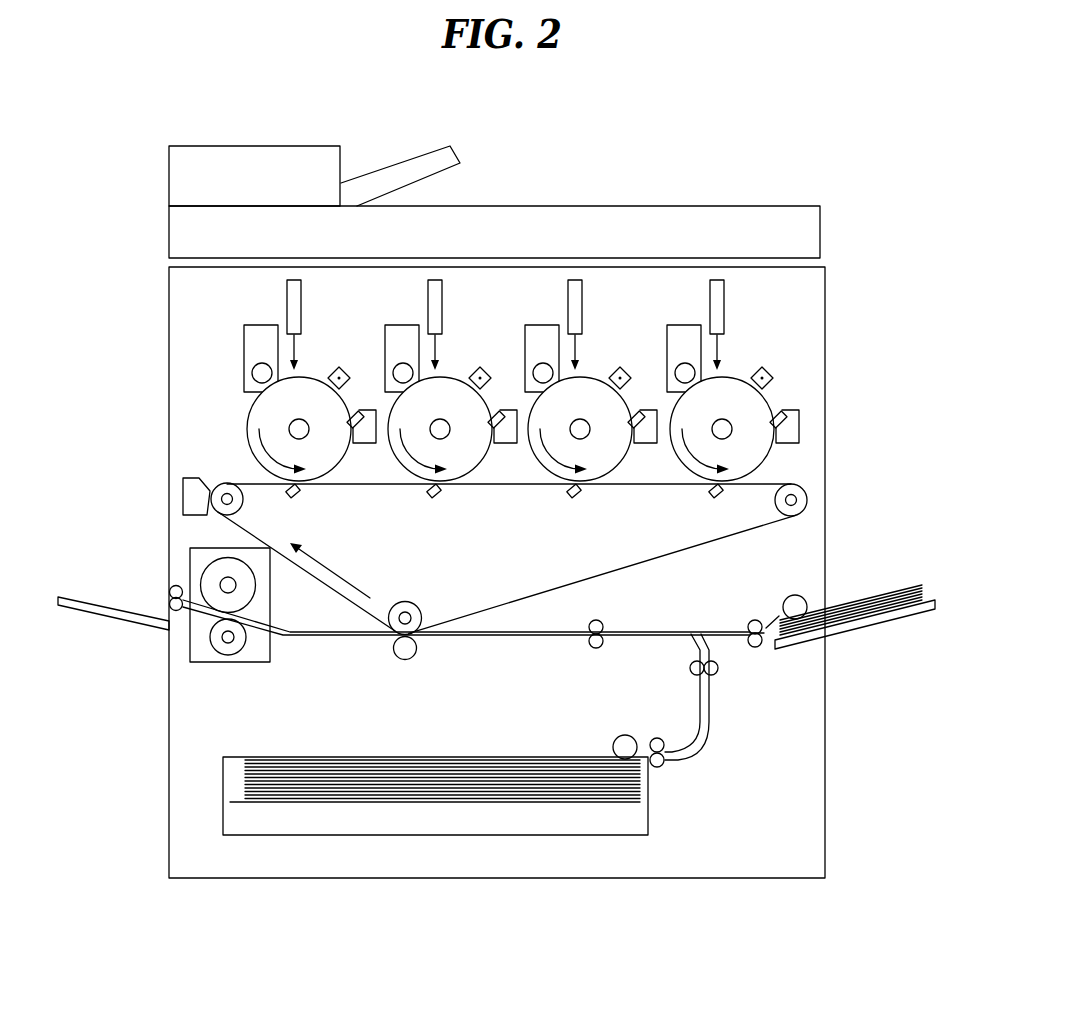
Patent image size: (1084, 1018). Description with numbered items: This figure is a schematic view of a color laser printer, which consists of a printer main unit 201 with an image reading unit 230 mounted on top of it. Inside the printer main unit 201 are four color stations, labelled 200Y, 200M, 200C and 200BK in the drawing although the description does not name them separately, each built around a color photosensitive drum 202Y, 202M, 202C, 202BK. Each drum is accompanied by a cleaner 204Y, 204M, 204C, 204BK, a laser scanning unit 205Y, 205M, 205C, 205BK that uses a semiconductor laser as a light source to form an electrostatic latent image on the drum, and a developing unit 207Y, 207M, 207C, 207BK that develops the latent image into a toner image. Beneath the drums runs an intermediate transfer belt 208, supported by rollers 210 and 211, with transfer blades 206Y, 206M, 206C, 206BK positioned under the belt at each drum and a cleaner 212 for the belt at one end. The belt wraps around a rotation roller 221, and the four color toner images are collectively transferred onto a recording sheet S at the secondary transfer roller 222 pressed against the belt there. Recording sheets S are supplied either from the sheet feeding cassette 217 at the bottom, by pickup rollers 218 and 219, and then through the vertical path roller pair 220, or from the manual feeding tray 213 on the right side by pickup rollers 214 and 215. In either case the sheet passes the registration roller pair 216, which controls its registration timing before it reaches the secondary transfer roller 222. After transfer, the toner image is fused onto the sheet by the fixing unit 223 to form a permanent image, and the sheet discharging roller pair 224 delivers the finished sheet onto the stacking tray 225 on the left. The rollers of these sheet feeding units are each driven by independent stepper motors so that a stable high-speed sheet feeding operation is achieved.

The printer main unit 201 is at (168, 308).
The image reading unit 230 is at (673, 206).
The image forming station (yellow) 200Y is at (291, 407).
The image forming station (magenta) 200M is at (431, 423).
The image forming station (cyan) 200C is at (570, 422).
The image forming station (black) 200BK is at (745, 408).
The color photosensitive drum 202Y is at (342, 467).
The color photosensitive drum 202M is at (482, 467).
The color photosensitive drum 202C is at (620, 467).
The color photosensitive drum 202BK is at (745, 462).
The cleaner 204Y is at (369, 444).
The cleaner 204M is at (510, 444).
The cleaner 204C is at (650, 444).
The cleaner 204BK is at (795, 410).
The laser scanning unit 205Y is at (287, 286).
The laser scanning unit 205M is at (428, 286).
The laser scanning unit 205C is at (568, 286).
The laser scanning unit 205BK is at (710, 286).
The transfer blade 206Y is at (284, 488).
The transfer blade 206M is at (426, 498).
The transfer blade 206C is at (566, 498).
The transfer blade 206BK is at (714, 500).
The developing unit 207Y is at (272, 325).
The developing unit 207M is at (413, 325).
The developing unit 207C is at (553, 325).
The developing unit 207BK is at (695, 325).
The intermediate transfer belt 208 is at (652, 559).
The roller 210 is at (808, 500).
The roller 211 is at (220, 485).
The cleaner 212 is at (183, 492).
The manual feeding tray 213 is at (868, 627).
The pickup roller 214 is at (795, 595).
The pickup roller 215 is at (748, 627).
The registration roller pair 216 is at (590, 627).
The sheet feeding cassette 217 is at (281, 757).
The pickup roller 218 is at (625, 735).
The pickup roller 219 is at (665, 762).
The vertical path roller pair 220 is at (717, 675).
The rotation roller 221 is at (414, 604).
The secondary transfer roller 222 is at (415, 660).
The fixing unit 223 is at (218, 663).
The sheet discharging roller pair 224 is at (169, 590).
The stacking tray 225 is at (90, 614).
The recording sheet S is at (870, 599).